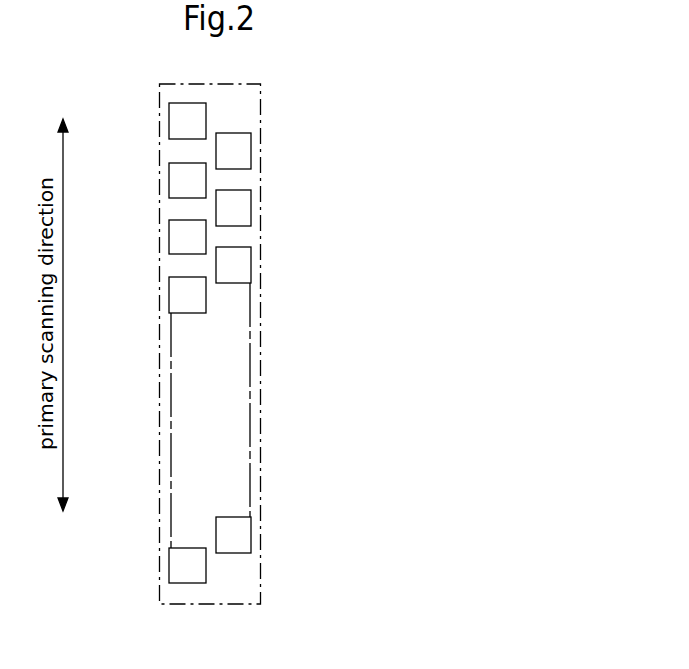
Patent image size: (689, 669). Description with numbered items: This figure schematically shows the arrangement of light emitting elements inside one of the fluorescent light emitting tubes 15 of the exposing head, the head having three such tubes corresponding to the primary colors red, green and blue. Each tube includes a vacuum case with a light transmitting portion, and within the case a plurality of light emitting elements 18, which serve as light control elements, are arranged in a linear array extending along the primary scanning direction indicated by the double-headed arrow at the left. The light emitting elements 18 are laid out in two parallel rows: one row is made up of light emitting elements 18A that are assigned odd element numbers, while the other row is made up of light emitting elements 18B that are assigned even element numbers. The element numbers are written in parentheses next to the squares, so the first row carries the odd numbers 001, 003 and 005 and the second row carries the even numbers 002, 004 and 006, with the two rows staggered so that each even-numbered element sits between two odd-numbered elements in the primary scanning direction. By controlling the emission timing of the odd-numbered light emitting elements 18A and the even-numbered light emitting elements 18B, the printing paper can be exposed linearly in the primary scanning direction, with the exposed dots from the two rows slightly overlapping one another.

The fluorescent light emitting tube 15 is at (261, 361).
The light emitting element 18 is at (231, 352).
The light emitting element having odd element number 18A is at (144, 343).
The light emitting element having even element number 18B is at (297, 367).
The element number 001 is at (180, 124).
The element number 002 is at (246, 149).
The element number 003 is at (180, 183).
The element number 004 is at (244, 200).
The element number 005 is at (153, 237).
The element number 006 is at (246, 278).